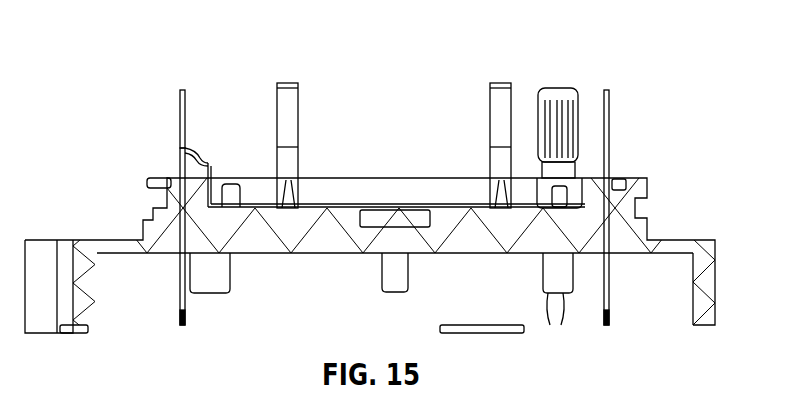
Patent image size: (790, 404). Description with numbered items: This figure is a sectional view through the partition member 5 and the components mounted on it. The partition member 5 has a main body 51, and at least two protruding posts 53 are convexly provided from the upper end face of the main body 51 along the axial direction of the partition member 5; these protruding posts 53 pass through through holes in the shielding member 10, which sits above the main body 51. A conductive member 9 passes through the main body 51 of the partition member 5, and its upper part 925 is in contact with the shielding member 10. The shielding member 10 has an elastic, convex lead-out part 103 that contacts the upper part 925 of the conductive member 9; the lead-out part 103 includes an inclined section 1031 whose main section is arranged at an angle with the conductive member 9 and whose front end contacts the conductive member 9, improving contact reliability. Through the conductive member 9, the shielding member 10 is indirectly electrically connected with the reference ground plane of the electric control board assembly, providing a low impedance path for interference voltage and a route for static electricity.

The partition member 5 is at (128, 245).
The conductive member 9 is at (181, 217).
The upper part 925 is at (181, 135).
The inclined section 1031 is at (186, 156).
The lead-out part 103 is at (212, 163).
The protruding posts 53 is at (230, 202).
The main body 51 is at (340, 225).
The shielding member 10 is at (490, 207).